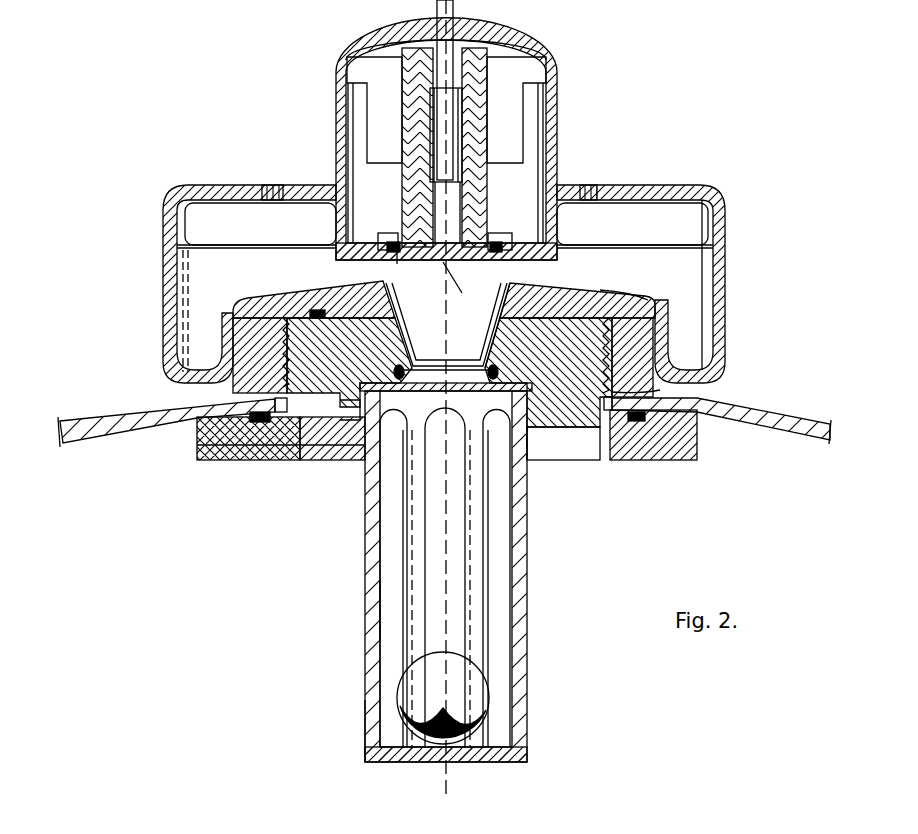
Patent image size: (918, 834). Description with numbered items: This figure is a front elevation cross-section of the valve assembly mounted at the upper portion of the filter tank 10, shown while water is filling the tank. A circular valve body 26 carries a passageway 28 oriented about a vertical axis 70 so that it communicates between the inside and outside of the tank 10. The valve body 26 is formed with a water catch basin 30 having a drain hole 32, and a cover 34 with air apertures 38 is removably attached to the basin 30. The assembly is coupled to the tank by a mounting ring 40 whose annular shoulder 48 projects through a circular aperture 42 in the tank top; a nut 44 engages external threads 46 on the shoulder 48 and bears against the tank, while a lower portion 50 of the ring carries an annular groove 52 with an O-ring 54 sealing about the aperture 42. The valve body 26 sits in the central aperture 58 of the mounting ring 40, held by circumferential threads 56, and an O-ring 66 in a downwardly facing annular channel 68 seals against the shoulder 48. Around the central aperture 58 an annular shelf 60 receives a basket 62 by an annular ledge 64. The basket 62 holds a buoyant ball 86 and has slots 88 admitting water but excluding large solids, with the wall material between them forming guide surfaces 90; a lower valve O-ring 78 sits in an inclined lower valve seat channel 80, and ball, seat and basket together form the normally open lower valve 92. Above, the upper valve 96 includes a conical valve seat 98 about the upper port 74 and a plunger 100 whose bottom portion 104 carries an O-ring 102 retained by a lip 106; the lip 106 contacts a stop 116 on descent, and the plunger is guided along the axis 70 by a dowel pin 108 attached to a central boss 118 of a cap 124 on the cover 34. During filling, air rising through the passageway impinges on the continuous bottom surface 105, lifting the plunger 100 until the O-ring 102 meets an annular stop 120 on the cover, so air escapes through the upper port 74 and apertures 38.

The tank 10 is at (90, 428).
The valve body 26 is at (560, 287).
The passageway 28 is at (480, 366).
The water catch basin 30 is at (163, 322).
The drain hole 32 is at (178, 380).
The cover 34 is at (705, 186).
The apertures 38 is at (283, 186).
The mounting ring 40 is at (556, 425).
The circular aperture 42 is at (300, 405).
The nut 44 is at (232, 391).
The external threads 46 is at (660, 390).
The annular shoulder 48 is at (600, 349).
The lower portion 50 is at (195, 440).
The annular groove 52 is at (222, 462).
The O-ring 54 is at (637, 422).
The circumferential threads 56 is at (352, 350).
The central aperture 58 is at (390, 432).
The annular shelf 60 is at (540, 430).
The basket 62 is at (368, 716).
The annular ledge 64 is at (563, 435).
The O-ring 66 is at (317, 312).
The annular channel 68 is at (607, 296).
The vertical axis 70 is at (444, 780).
The upper port 74 is at (483, 278).
The lower valve O-ring 78 is at (447, 392).
The lower valve seat channel 80 is at (512, 357).
The ball 86 is at (445, 700).
The slots 88 is at (500, 635).
The guide surfaces 90 is at (475, 580).
The lower valve 92 is at (350, 603).
The upper valve 96 is at (582, 128).
The conical valve seat 98 is at (393, 316).
The plunger 100 is at (407, 143).
The O-ring 102 is at (495, 238).
The bottom portion 104 is at (410, 247).
The bottom surface 105 is at (466, 290).
The lip 106 is at (397, 264).
The dowel pin 108 is at (452, 63).
The stop 116 is at (398, 340).
The central boss 118 is at (460, 32).
The annular stop 120 is at (337, 230).
The cap 124 is at (375, 38).